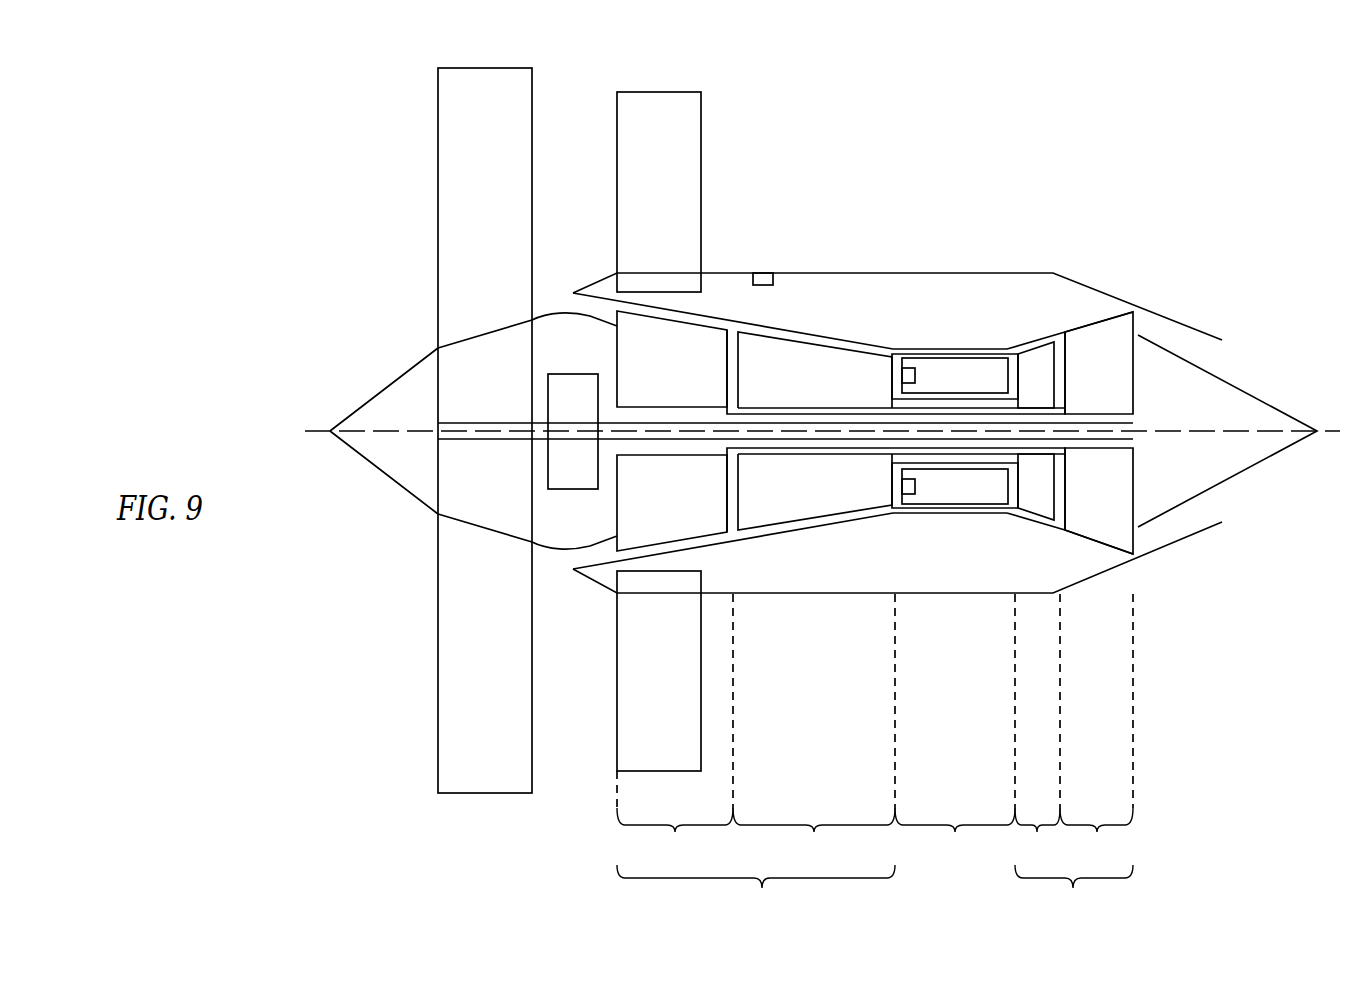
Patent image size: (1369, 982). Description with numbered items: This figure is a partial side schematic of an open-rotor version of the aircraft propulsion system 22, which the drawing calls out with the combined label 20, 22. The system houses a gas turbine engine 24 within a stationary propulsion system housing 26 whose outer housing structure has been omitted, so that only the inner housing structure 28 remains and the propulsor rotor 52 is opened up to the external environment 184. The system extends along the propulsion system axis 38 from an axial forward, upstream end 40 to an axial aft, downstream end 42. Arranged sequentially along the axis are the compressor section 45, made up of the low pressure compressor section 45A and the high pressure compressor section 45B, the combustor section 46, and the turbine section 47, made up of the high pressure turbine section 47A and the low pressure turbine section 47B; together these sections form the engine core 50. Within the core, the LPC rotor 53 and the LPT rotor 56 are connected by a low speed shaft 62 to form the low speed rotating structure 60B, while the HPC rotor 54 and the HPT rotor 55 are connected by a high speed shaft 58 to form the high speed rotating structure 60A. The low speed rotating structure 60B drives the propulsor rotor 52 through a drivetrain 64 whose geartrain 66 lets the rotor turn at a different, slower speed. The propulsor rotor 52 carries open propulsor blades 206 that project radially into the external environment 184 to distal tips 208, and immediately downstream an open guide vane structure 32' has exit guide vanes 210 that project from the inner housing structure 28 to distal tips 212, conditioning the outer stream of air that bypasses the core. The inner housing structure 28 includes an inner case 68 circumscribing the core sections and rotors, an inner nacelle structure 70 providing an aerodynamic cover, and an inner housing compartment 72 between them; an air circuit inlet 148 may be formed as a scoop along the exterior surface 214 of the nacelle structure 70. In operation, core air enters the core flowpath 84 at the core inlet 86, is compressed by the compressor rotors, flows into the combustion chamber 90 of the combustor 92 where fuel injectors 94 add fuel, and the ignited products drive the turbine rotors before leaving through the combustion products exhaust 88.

The gas turbine engine 20 is at (228, 61).
The aircraft propulsion system 22 is at (275, 92).
The gas turbine engine 24 is at (572, 882).
The propulsion system housing 26 is at (897, 382).
The inner housing structure 28 is at (818, 252).
The open guide vane structure 32' is at (763, 94).
The propulsion system axis 38 is at (320, 452).
The axial forward, upstream end 40 is at (330, 431).
The axial aft, downstream end 42 is at (1317, 431).
The compressor section 45 is at (756, 892).
The low pressure compressor section 45A is at (675, 836).
The high pressure compressor section 45B is at (814, 836).
The combustor section 46 is at (955, 836).
The turbine section 47 is at (1074, 892).
The high pressure turbine section 47A is at (1037, 836).
The low pressure turbine section 47B is at (1096, 836).
The core 50 is at (908, 905).
The propulsor rotor 52 is at (425, 109).
The low pressure compressor rotor 53 is at (652, 377).
The high pressure compressor rotor 54 is at (781, 384).
The high pressure turbine rotor 55 is at (1023, 377).
The low pressure turbine rotor 56 is at (1088, 374).
The high speed shaft 58 is at (960, 397).
The high speed rotating structure 60A is at (1037, 345).
The low speed rotating structure 60B is at (1105, 317).
The low speed shaft 62 is at (935, 413).
The drivetrain 64 is at (573, 378).
The geartrain 66 is at (560, 437).
The inner case 68 is at (797, 328).
The inner nacelle structure 70 is at (929, 235).
The inner housing compartment 72 is at (940, 306).
The core flowpath 84 is at (1148, 328).
The airflow inlet 86 is at (572, 307).
The combustion products exhaust 88 is at (1222, 357).
The combustion chamber 90 is at (953, 501).
The combustor 92 is at (965, 507).
The fuel injectors 94 is at (905, 497).
The air circuit inlet 148 is at (755, 293).
The external environment 184 is at (228, 239).
The open propulsor blades 206 is at (470, 209).
The distal tip 208 is at (485, 68).
The open exit guide vanes 210 is at (644, 251).
The distal tip 212 is at (645, 92).
The exterior surface 214 is at (915, 273).